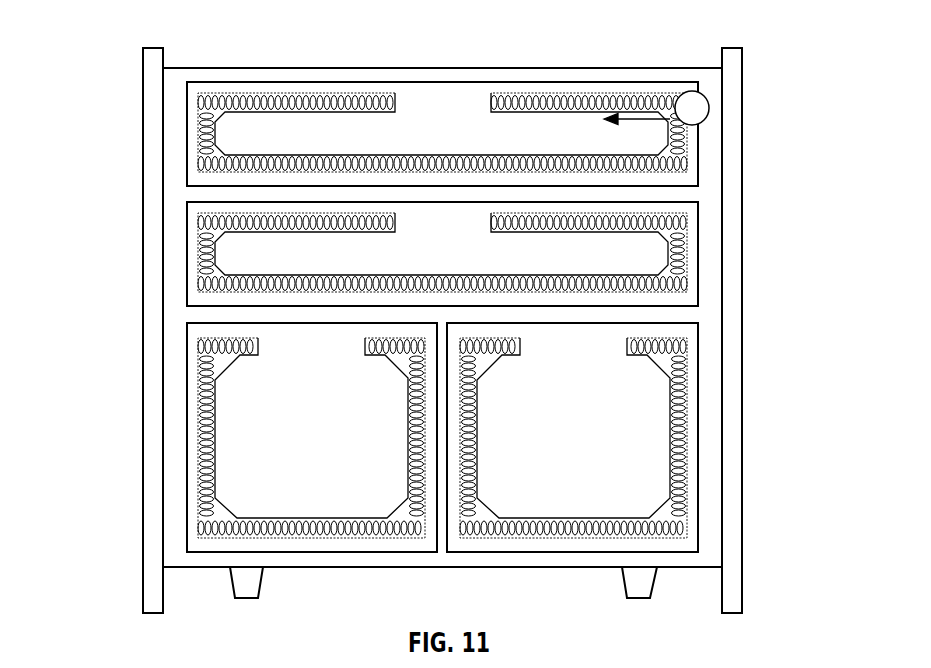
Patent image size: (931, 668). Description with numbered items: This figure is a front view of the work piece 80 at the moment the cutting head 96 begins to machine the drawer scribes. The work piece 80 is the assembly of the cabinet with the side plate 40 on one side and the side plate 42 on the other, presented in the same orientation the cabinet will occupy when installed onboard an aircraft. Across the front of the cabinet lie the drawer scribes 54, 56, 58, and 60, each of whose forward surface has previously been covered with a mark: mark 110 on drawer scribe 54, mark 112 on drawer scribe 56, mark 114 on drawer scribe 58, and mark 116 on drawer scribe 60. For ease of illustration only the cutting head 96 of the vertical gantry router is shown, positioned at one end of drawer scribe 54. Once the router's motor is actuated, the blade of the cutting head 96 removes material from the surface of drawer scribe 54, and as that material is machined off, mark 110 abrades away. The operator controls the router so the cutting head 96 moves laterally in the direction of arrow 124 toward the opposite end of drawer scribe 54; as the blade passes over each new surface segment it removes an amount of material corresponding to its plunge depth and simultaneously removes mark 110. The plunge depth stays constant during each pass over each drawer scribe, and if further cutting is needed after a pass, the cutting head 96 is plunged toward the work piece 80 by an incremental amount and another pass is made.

The work piece 80 is at (123, 48).
The side plate 40 is at (742, 328).
The side plate 42 is at (143, 332).
The drawer scribe 54 is at (693, 150).
The drawer scribe 56 is at (693, 252).
The drawer scribe 58 is at (198, 438).
The drawer scribe 60 is at (688, 410).
The cutting head 96 is at (693, 108).
The mark 110 is at (608, 98).
The mark 112 is at (305, 215).
The mark 114 is at (412, 440).
The mark 116 is at (672, 438).
The arrow 124 is at (643, 124).